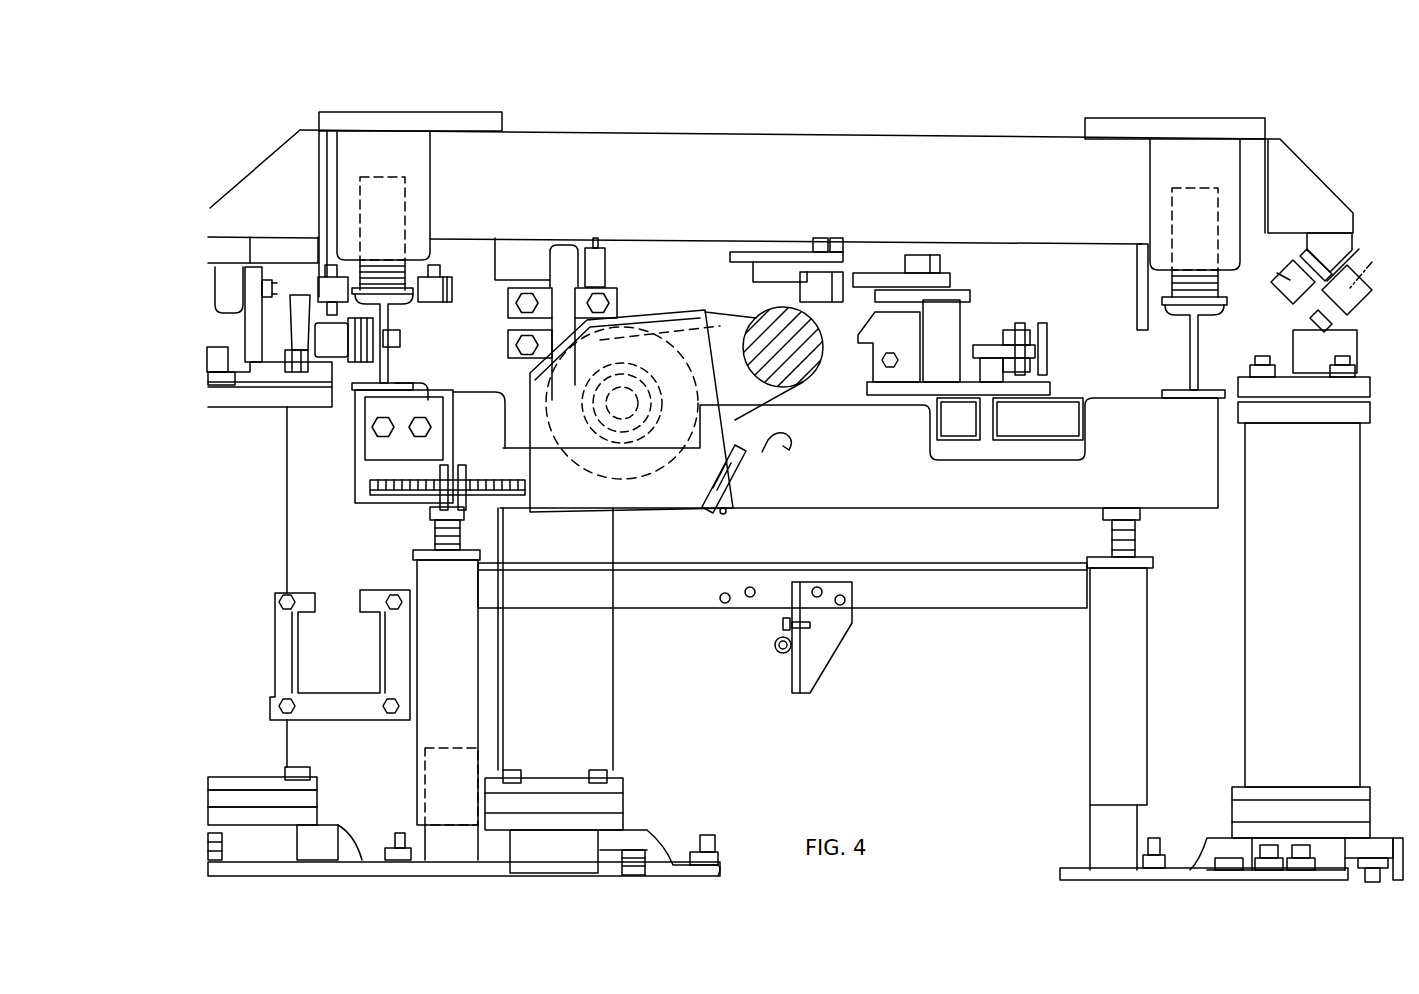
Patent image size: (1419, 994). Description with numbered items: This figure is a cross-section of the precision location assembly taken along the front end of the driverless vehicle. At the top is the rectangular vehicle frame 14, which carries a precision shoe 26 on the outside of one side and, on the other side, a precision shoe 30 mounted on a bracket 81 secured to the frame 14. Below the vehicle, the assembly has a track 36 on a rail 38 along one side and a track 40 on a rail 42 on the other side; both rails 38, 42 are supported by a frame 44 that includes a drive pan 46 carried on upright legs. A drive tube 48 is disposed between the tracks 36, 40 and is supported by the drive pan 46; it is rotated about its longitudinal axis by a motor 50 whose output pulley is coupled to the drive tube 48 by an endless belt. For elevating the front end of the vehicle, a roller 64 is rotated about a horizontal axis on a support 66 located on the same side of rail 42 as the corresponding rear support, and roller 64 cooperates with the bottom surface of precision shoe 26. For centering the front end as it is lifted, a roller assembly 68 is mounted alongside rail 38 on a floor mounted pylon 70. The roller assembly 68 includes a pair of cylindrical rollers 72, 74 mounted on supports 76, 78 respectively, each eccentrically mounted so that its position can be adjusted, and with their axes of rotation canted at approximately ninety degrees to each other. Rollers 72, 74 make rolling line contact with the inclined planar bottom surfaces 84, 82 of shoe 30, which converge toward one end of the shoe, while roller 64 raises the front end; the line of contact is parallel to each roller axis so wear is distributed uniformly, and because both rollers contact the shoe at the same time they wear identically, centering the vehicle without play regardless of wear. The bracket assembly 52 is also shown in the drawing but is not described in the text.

The frame 14 is at (889, 216).
The precision shoe 26 is at (230, 252).
The precision shoe 30 is at (1322, 240).
The track 36 is at (1170, 305).
The rail 38 is at (1190, 360).
The track 40 is at (420, 295).
The rail 42 is at (382, 366).
The frame 44 is at (945, 521).
The drive pan 46 is at (880, 480).
The drive tube 48 is at (800, 370).
The motor 50 is at (638, 314).
The bracket assembly 52 is at (983, 317).
The roller 64 is at (237, 277).
The support 66 is at (253, 353).
The roller assembly 68 is at (1370, 208).
The pylon 70 is at (1255, 563).
The roller 72 is at (1362, 298).
The roller 74 is at (1287, 298).
The support 76 is at (1310, 370).
The support 78 is at (1320, 342).
The bracket 81 is at (1297, 167).
The inclined planar surface 82 is at (1345, 262).
The inclined planar surface 84 is at (1308, 256).